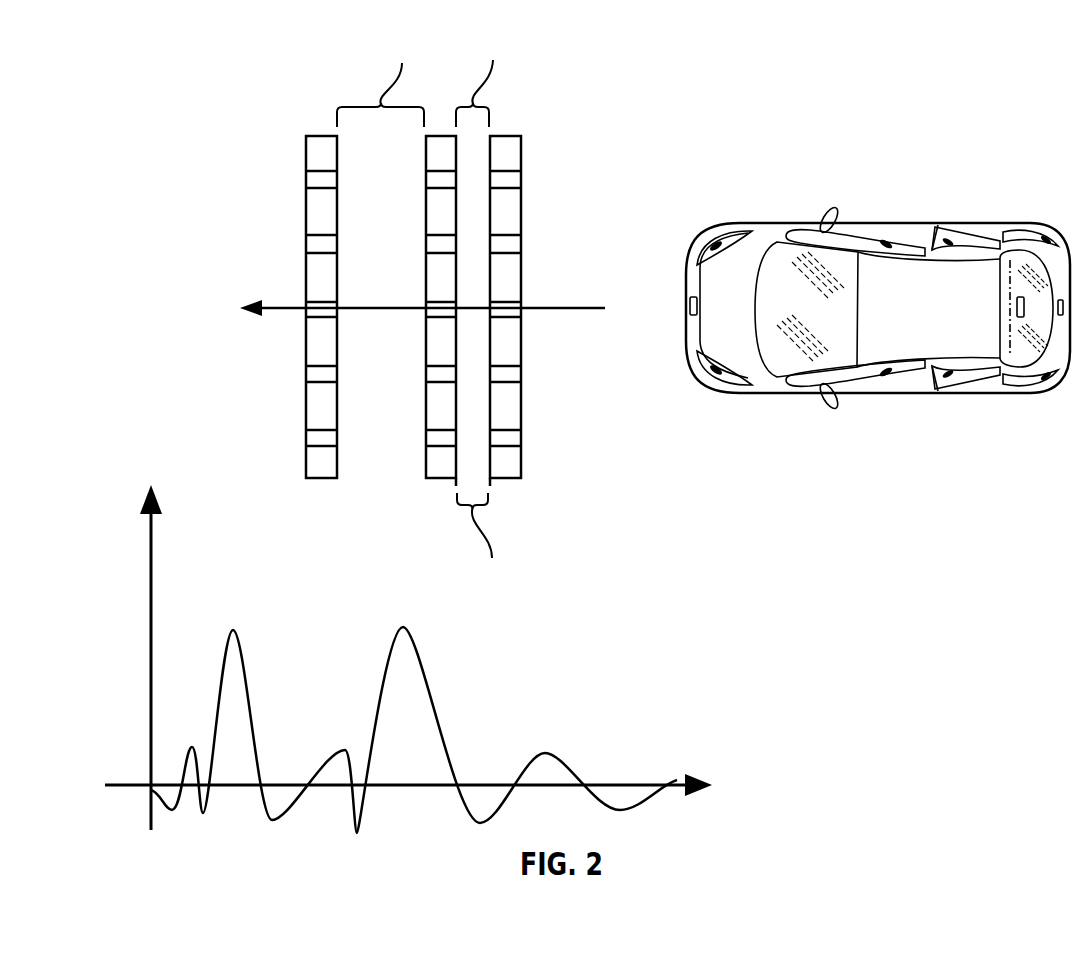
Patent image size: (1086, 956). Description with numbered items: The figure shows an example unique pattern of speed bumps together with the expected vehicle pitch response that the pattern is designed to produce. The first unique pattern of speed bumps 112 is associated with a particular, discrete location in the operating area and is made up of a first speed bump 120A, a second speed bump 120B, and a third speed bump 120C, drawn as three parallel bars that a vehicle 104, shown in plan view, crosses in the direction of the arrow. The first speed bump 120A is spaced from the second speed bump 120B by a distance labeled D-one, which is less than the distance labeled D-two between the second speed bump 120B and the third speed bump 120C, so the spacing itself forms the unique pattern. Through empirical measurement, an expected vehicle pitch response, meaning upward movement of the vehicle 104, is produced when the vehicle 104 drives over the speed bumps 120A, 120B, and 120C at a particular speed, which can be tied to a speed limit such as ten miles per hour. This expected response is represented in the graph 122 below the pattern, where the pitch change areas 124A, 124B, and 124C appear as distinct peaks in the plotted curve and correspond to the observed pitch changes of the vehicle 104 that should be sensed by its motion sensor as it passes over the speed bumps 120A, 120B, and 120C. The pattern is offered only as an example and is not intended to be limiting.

The first unique pattern of speed bumps 112 is at (228, 52).
The first speed bump 120A is at (515, 135).
The second speed bump 120B is at (430, 135).
The third speed bump 120C is at (313, 135).
The vehicle 104 is at (928, 332).
The graph 122 is at (636, 578).
The pitch change area 124A is at (549, 740).
The pitch change area 124B is at (407, 617).
The pitch change area 124C is at (236, 618).